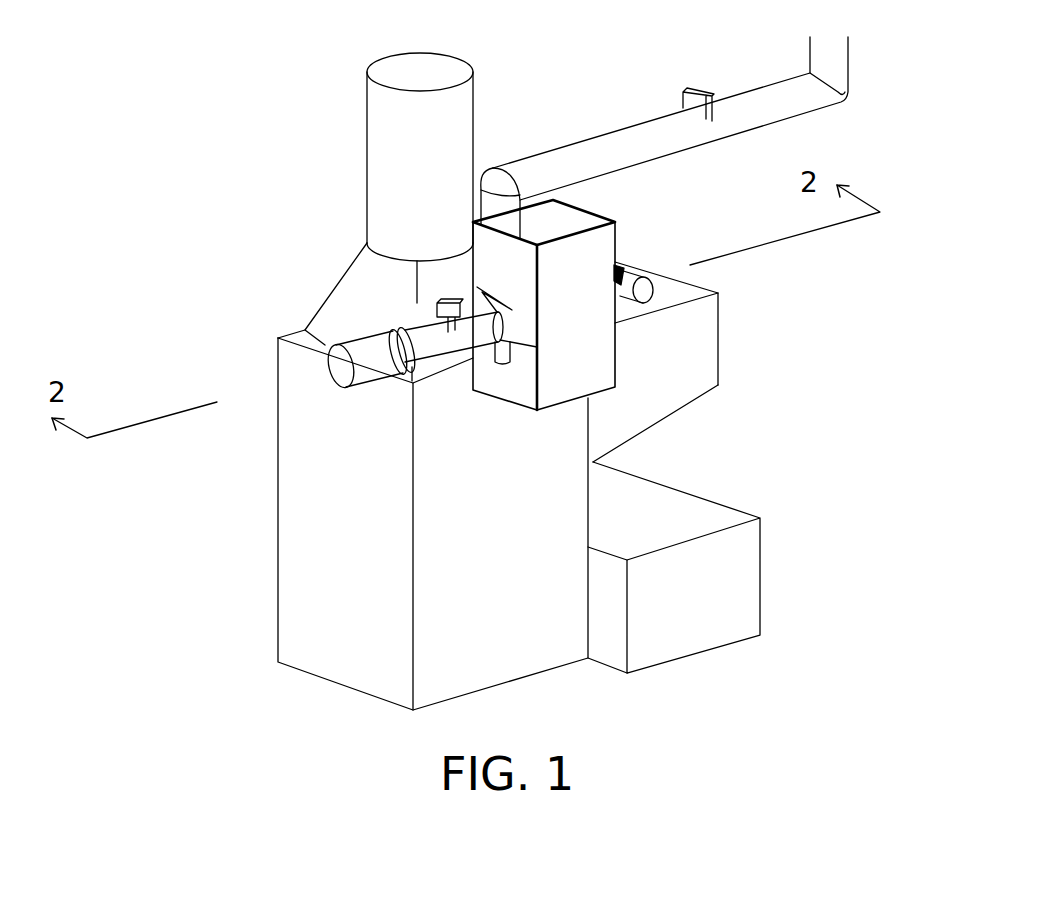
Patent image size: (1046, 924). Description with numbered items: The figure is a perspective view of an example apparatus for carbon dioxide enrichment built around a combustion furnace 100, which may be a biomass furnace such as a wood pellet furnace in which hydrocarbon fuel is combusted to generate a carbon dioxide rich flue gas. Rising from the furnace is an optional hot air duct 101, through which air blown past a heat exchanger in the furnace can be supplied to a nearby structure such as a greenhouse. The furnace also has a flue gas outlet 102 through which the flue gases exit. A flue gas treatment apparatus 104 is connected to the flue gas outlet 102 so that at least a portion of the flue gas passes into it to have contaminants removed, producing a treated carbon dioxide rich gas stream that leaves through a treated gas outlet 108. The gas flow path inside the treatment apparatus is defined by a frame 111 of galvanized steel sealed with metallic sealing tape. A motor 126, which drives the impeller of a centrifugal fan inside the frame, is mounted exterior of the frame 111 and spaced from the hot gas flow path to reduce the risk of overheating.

The combustion furnace 100 is at (367, 642).
The hot air duct 101 is at (438, 142).
The flue gas outlet 102 is at (622, 153).
The flue gas treatment apparatus 104 is at (595, 357).
The treated gas outlet 108 is at (342, 367).
The frame 111 is at (428, 345).
The motor 126 is at (643, 292).